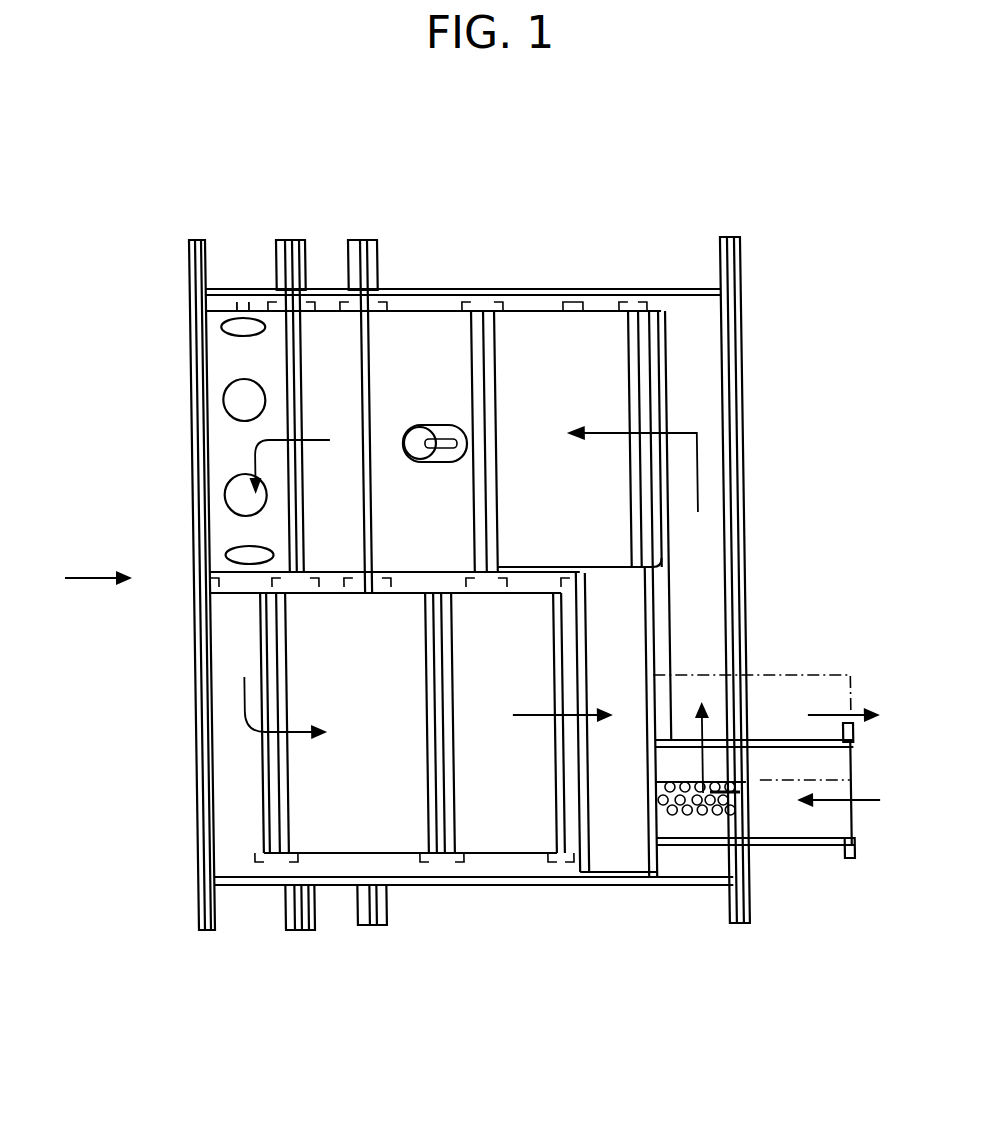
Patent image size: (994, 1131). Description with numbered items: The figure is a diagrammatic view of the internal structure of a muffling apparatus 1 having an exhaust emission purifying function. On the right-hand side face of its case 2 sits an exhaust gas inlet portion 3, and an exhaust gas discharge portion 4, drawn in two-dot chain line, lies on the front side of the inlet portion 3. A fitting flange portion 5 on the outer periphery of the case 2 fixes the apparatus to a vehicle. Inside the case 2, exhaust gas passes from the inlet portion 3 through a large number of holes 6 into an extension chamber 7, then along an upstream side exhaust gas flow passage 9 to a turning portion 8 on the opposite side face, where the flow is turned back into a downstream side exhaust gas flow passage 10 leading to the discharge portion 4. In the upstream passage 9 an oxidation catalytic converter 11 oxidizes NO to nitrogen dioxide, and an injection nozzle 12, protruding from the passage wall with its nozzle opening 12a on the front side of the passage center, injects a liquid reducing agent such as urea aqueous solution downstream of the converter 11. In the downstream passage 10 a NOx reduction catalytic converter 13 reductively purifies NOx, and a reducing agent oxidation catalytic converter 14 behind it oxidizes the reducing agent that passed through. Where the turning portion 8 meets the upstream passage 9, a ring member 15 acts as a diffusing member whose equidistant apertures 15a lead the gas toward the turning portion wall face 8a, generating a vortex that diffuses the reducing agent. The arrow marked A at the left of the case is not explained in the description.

The muffling apparatus 1 is at (772, 264).
The case 2 is at (500, 290).
The exhaust gas inlet portion 3 is at (800, 832).
The exhaust gas discharge portion 4 is at (810, 680).
The fitting flange portion 5 is at (188, 242).
The holes 6 is at (730, 814).
The extension chamber 7 is at (712, 372).
The turning portion 8 is at (227, 623).
The turning portion wall face 8a is at (243, 302).
The upstream side exhaust gas flow passage 9 is at (420, 310).
The downstream side exhaust gas flow passage 10 is at (443, 843).
The oxidation catalytic converter 11 is at (600, 325).
The injection nozzle 12 is at (445, 463).
The nozzle opening 12a is at (410, 428).
The NOx reduction catalytic converter 13 is at (342, 838).
The reducing agent oxidation catalytic converter 14 is at (535, 838).
The ring member 15 is at (220, 460).
The apertures 15a is at (244, 396).
The air flow direction A is at (83, 586).